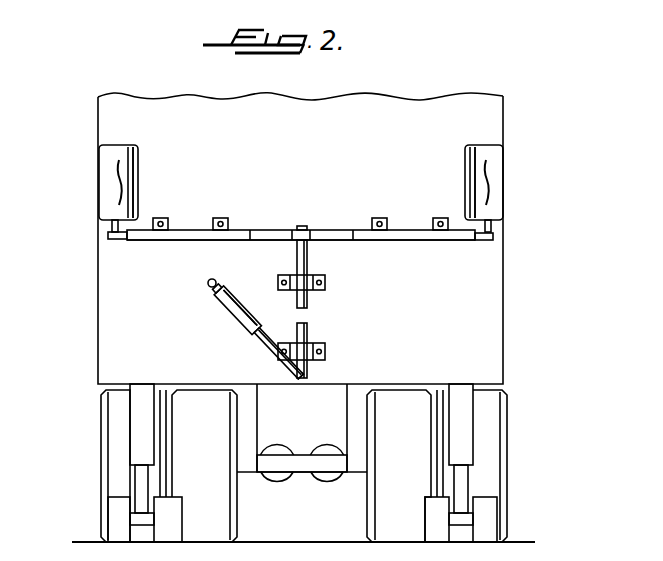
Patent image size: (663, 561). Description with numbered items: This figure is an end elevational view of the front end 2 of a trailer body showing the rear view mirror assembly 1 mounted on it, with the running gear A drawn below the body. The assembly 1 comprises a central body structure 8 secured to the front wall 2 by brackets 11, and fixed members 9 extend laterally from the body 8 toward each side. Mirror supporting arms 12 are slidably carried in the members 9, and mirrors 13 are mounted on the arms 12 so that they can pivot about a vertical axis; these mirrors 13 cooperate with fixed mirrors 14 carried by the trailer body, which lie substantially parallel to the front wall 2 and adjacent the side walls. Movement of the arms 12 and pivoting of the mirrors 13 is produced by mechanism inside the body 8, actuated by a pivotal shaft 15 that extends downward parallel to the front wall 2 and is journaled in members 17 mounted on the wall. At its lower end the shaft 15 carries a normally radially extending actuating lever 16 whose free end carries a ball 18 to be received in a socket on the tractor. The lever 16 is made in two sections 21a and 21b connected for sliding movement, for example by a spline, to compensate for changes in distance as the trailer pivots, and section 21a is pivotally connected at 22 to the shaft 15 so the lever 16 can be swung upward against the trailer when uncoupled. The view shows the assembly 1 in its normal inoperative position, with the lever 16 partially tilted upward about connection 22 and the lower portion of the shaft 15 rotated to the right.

The rear view mirror assembly 1 is at (346, 241).
The front end 2 is at (493, 116).
The central body structure 8 is at (327, 231).
The fixed members 9 is at (193, 229).
The brackets 11 is at (218, 217).
The mirror supporting arms 12 is at (107, 236).
The mirrors 13 is at (107, 172).
The fixed mirrors 14 is at (138, 153).
The pivotal shaft 15 is at (308, 300).
The actuating lever 16 is at (255, 339).
The members 17 is at (316, 276).
The ball 18 is at (207, 283).
The section 21a is at (268, 335).
The section 21b is at (238, 298).
The pivotal connection 22 is at (307, 376).
The wheel assembly A is at (100, 466).